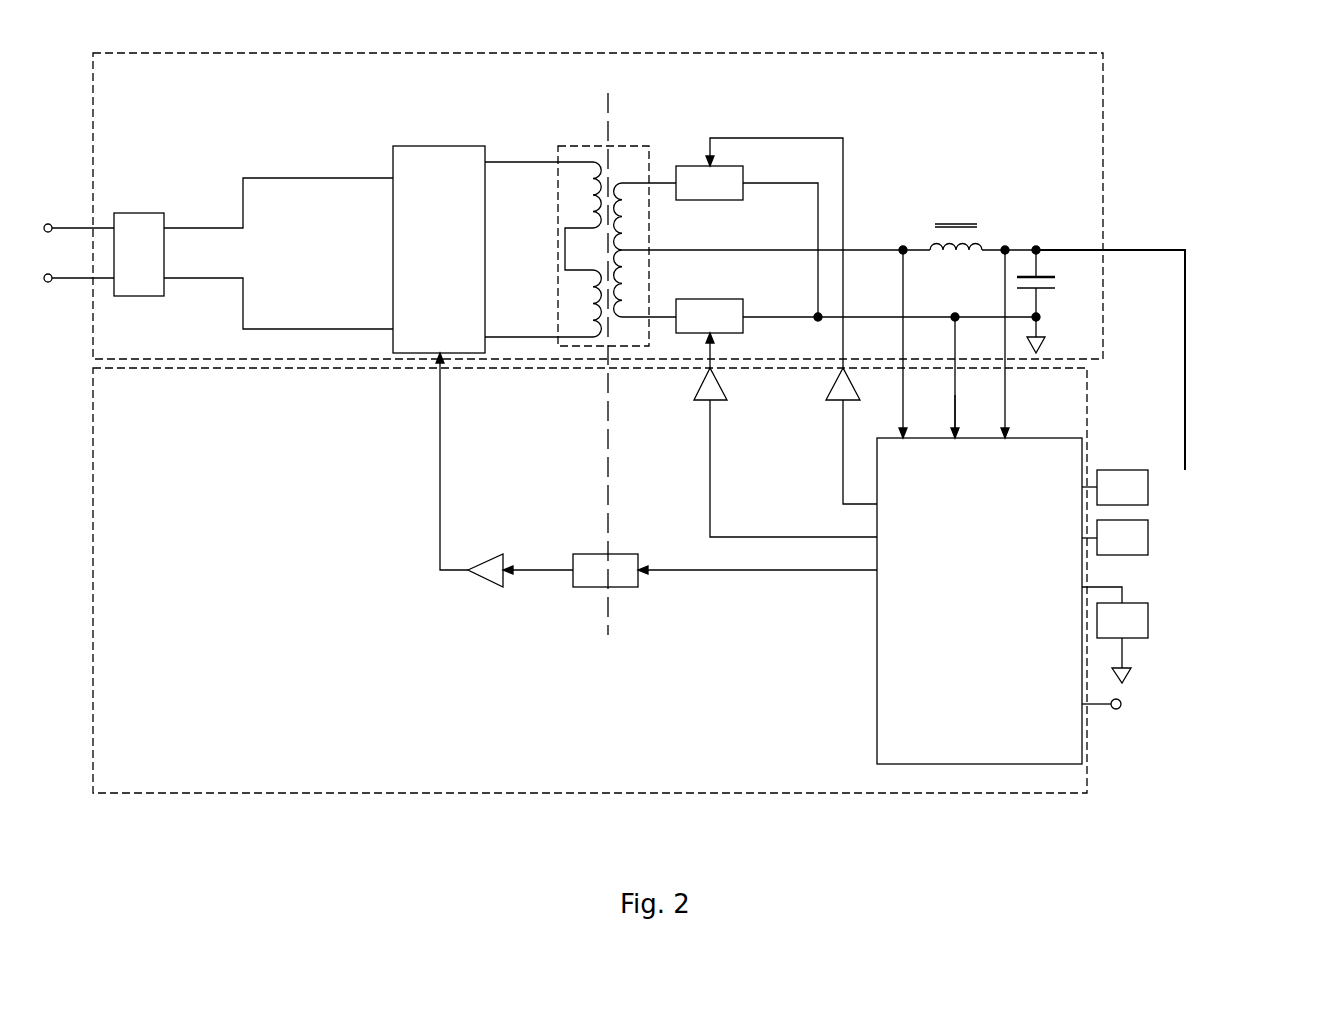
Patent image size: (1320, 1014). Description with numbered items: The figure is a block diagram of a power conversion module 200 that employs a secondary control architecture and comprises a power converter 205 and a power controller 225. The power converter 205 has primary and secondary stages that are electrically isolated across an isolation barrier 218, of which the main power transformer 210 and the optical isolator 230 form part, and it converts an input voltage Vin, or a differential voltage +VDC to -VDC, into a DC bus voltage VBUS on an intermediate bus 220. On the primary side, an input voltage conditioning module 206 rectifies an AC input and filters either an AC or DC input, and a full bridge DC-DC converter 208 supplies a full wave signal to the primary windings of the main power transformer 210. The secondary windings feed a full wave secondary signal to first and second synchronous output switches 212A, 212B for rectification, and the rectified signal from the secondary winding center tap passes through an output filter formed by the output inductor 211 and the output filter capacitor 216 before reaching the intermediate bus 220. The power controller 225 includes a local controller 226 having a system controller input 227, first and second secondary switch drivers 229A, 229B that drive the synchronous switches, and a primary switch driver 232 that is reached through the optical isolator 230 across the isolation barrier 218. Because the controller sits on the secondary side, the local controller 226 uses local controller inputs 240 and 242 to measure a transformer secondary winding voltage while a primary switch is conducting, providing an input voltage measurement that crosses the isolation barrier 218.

The power conversion module 200 is at (1238, 90).
The power converter 205 is at (1103, 127).
The input voltage conditioning module 206 is at (135, 210).
The full bridge DC-DC converter 208 is at (418, 143).
The main power transformer 210 is at (649, 150).
The output inductor 211 is at (980, 242).
The first synchronous output switch 212A is at (712, 200).
The second synchronous output switch 212B is at (720, 298).
The output filter capacitor 216 is at (1047, 292).
The isolation barrier 218 is at (608, 108).
The intermediate bus 220 is at (1168, 242).
The power controller 225 is at (1088, 775).
The local controller 226 is at (1032, 437).
The system controller input 227 is at (1095, 705).
The first secondary switch driver 229A is at (830, 402).
The second secondary switch driver 229B is at (720, 402).
The optical isolator 230 is at (612, 553).
The primary switch driver 232 is at (503, 560).
The local controller input 240 is at (905, 298).
The local controller input 242 is at (958, 433).